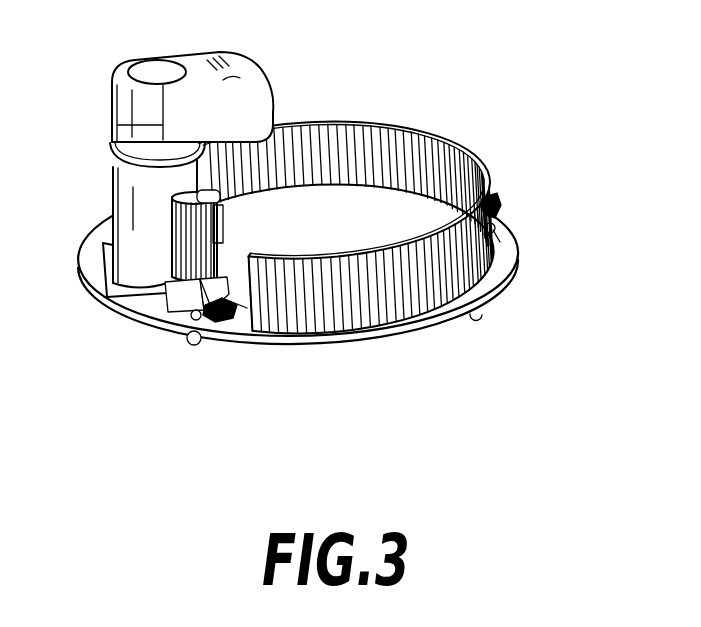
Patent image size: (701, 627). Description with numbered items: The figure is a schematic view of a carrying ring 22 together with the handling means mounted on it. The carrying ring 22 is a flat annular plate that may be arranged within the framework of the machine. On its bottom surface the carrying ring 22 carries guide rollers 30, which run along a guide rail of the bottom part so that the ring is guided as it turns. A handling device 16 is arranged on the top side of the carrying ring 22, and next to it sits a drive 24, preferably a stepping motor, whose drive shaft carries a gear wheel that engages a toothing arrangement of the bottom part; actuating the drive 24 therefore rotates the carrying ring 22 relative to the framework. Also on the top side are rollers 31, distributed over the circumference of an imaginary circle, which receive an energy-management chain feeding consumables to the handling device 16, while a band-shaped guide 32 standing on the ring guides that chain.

The handling device 16 is at (112, 178).
The carrying ring 22 is at (362, 362).
The drive 24 is at (183, 295).
The guide rollers 30 is at (190, 358).
The rollers 31 is at (226, 330).
The guide 32 is at (380, 157).